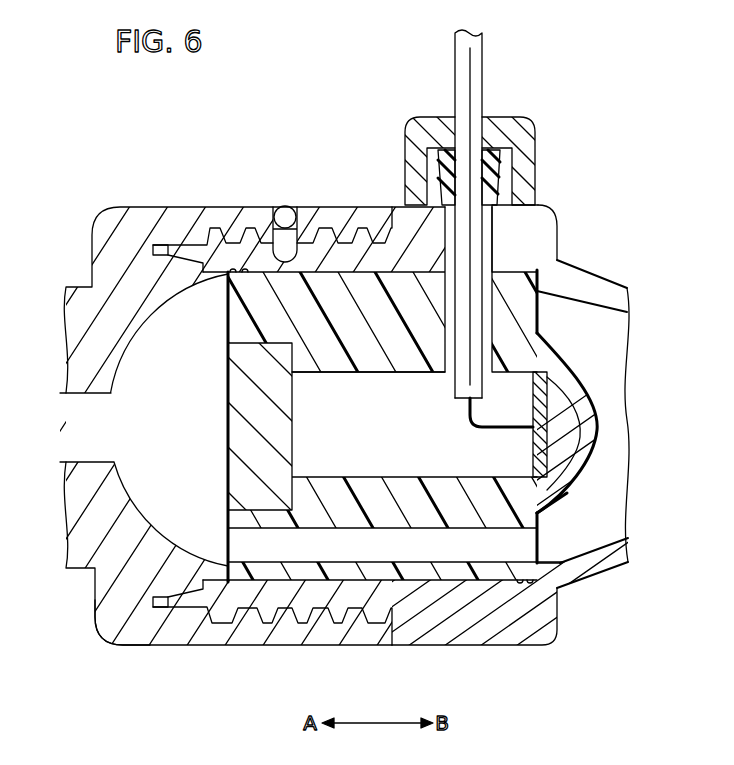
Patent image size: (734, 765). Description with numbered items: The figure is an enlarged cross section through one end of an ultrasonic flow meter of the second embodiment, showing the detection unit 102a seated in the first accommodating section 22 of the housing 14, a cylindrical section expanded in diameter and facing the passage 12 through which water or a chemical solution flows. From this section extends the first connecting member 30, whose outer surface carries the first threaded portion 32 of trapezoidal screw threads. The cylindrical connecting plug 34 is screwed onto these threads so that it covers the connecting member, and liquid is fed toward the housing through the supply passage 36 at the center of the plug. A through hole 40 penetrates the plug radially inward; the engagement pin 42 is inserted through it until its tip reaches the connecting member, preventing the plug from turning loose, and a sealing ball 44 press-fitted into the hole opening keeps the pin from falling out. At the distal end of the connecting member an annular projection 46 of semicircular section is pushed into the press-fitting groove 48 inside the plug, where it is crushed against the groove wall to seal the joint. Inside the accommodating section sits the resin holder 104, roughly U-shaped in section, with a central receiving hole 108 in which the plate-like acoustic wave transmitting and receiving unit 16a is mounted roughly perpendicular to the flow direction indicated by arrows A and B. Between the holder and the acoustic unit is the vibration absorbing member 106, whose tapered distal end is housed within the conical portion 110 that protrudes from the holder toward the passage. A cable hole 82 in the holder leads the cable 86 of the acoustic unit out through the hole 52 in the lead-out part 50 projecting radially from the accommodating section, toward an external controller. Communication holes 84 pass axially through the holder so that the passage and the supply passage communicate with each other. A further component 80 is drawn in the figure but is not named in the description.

The passage 12 is at (610, 472).
The housing 14 is at (592, 585).
The acoustic wave transmitting and receiving unit 16a is at (533, 447).
The first accommodating section 22 is at (499, 645).
The first connecting member 30 is at (318, 263).
The first threaded portion 32 is at (220, 233).
The connecting plug 34 is at (103, 640).
The supply passage 36 is at (83, 436).
The through hole 40 is at (228, 283).
The engagement pin 42 is at (268, 230).
The sealing ball 44 is at (285, 206).
The annular projection 46 is at (168, 245).
The press-fitting groove 48 is at (183, 250).
The lead-out part 50 is at (510, 163).
The hole 52 is at (488, 228).
The insulator block 80 is at (240, 480).
The cable hole 82 is at (450, 362).
The communication hole 84 is at (422, 552).
The cable 86 is at (465, 72).
The detection unit 102a is at (563, 487).
The holder 104 is at (520, 348).
The vibration absorbing member 106 is at (563, 410).
The receiving hole 108 is at (305, 433).
The conical portion 110 is at (590, 431).